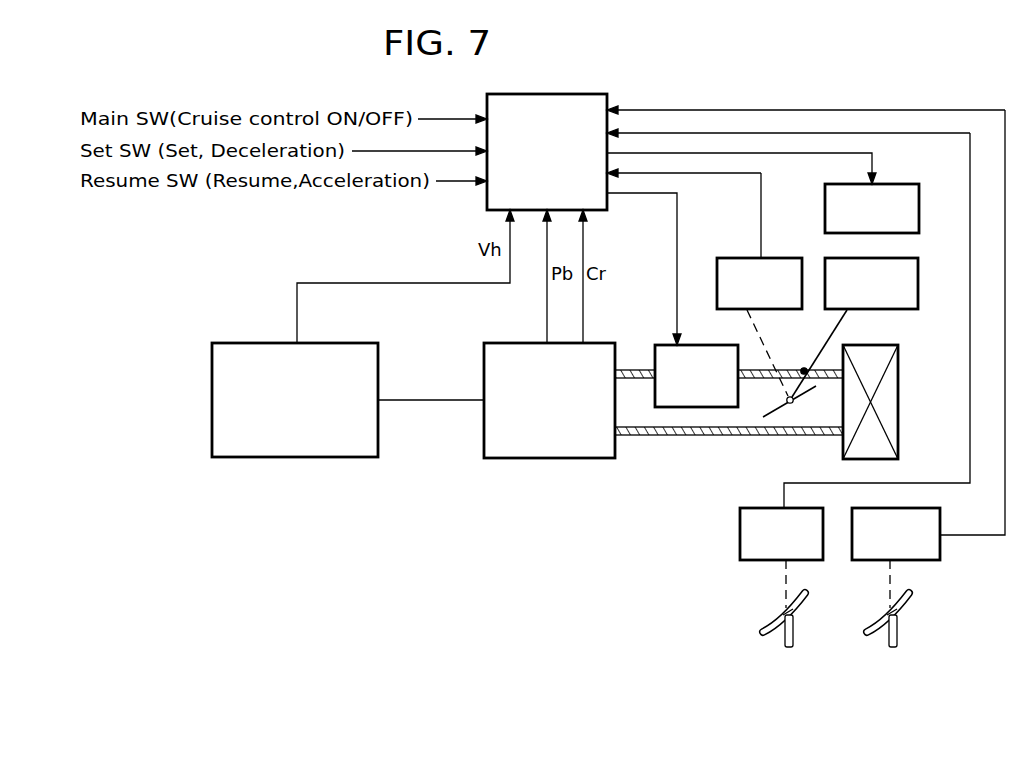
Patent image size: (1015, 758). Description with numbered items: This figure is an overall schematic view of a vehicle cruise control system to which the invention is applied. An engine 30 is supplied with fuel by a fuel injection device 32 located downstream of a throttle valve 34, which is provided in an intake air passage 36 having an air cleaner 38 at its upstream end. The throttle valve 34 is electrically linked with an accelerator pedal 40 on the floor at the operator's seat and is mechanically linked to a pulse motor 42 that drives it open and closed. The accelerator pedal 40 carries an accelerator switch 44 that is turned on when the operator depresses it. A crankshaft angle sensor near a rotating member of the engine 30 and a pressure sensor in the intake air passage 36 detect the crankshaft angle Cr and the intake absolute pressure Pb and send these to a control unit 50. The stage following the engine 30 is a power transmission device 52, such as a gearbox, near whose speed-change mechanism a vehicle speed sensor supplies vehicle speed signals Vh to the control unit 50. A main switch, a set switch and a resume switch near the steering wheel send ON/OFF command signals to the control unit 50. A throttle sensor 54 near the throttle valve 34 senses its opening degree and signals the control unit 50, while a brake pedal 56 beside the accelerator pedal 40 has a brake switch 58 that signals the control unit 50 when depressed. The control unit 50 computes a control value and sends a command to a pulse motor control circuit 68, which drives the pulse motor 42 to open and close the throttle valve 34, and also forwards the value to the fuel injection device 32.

The engine 30 is at (565, 460).
The fuel injection device 32 is at (666, 343).
The throttle valve 34 is at (806, 389).
The intake air passage 36 is at (700, 437).
The air cleaner 38 is at (900, 362).
The accelerator pedal 40 is at (789, 648).
The pulse motor 42 is at (918, 268).
The accelerator switch 44 is at (740, 535).
The control unit 50 is at (590, 93).
The power transmission device 52 is at (360, 458).
The throttle sensor 54 is at (727, 257).
The brake pedal 56 is at (893, 648).
The brake switch 58 is at (940, 551).
The pulse motor control circuit 68 is at (894, 184).